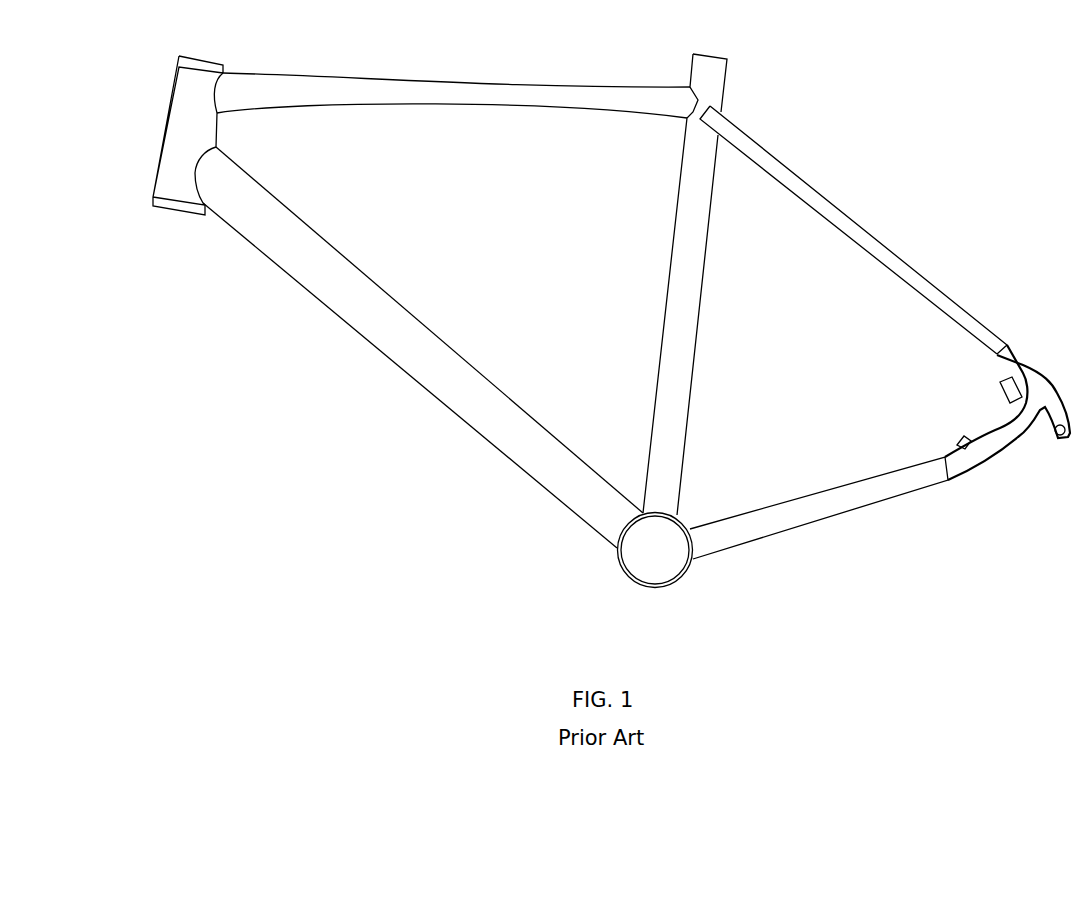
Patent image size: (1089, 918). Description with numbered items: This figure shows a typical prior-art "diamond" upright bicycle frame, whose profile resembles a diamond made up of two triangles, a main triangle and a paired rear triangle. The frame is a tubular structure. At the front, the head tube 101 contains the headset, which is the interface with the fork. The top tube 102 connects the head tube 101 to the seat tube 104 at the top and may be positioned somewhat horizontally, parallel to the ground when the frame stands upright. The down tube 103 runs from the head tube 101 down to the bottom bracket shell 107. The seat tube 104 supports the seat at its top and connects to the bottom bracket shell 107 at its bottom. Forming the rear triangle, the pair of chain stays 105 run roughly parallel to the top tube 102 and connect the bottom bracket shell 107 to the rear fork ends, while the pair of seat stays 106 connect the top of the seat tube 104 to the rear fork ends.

The head tube 101 is at (166, 218).
The top tube 102 is at (426, 111).
The down tube 103 is at (437, 379).
The seat tube 104 is at (656, 285).
The chain stays 105 is at (864, 462).
The seat stays 106 is at (838, 189).
The bottom bracket shell 107 is at (664, 539).